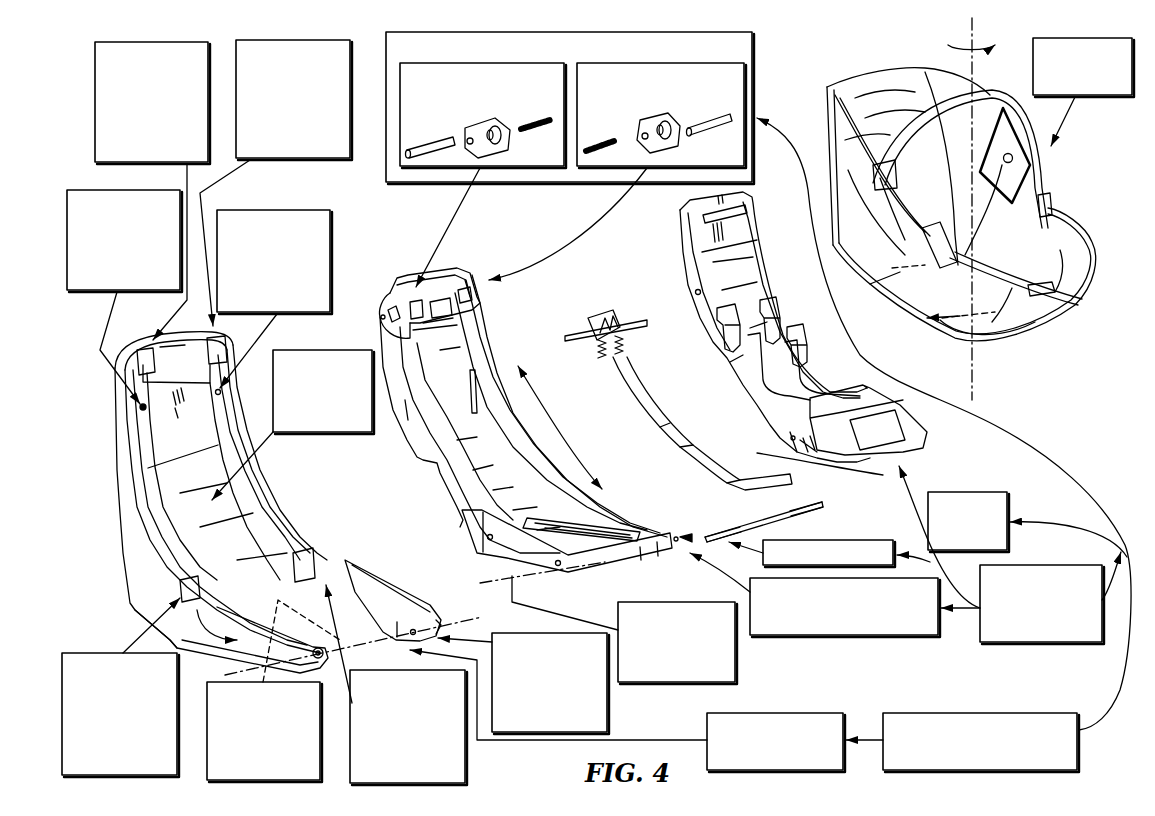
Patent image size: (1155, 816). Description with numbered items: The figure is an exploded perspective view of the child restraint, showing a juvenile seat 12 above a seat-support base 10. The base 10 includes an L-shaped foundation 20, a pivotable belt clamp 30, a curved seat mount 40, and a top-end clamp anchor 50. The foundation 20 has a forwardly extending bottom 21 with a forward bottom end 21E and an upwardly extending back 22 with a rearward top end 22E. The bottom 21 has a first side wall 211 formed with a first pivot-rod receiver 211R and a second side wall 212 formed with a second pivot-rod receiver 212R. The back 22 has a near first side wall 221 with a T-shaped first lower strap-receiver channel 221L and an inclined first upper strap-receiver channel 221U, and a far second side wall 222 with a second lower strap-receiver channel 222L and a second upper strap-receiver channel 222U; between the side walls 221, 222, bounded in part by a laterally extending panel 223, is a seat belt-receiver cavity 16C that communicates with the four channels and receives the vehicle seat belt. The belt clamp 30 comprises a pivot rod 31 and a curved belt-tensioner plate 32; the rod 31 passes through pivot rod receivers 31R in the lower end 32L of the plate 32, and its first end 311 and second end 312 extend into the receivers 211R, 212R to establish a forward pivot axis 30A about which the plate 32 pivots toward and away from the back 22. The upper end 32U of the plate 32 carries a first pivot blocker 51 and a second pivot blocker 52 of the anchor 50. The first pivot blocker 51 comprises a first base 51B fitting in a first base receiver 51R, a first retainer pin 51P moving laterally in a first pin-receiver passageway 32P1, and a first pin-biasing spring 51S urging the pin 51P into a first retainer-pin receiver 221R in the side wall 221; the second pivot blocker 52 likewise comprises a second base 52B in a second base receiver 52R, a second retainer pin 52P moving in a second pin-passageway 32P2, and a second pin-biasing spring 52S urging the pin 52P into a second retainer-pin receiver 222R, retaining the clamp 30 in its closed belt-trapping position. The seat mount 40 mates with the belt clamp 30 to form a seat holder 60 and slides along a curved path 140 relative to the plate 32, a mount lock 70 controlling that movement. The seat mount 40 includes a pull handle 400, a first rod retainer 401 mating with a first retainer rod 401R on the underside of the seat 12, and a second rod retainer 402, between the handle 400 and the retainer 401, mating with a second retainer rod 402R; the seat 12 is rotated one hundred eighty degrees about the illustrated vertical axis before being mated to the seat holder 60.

The seat-support base 10 is at (1079, 740).
The juvenile seat 12 is at (1041, 38).
The seat belt-receiver cavity 16C is at (346, 434).
The L-shaped foundation 20 is at (820, 713).
The bottom 21 is at (209, 502).
The forward bottom end 21E is at (395, 628).
The back 22 is at (400, 582).
The rearward top end 22E is at (114, 436).
The pivotable belt clamp 30 is at (1016, 643).
The forward pivot axis 30A is at (737, 660).
The pivot rod 31 is at (850, 540).
The pivot rod receiver 31R is at (560, 567).
The belt-tensioner plate 32 is at (880, 636).
The lower end of belt-tensioner plate 32L is at (623, 560).
The upper end of belt-tensioner plate 32U is at (480, 284).
The first pin-receiver passageway 32P1 is at (380, 312).
The second pin-passageway 32P2 is at (545, 292).
The seat mount 40 is at (945, 492).
The top-end clamp anchor 50 is at (754, 38).
The first pivot blocker 51 is at (513, 170).
The first base 51B is at (480, 128).
The first retainer pin 51P is at (426, 156).
The first base receiver 51R is at (390, 320).
The first pin-biasing spring 51S is at (548, 134).
The second pivot blocker 52 is at (680, 170).
The second base 52B is at (664, 141).
The second retainer pin 52P is at (733, 115).
The second base receiver 52R is at (481, 304).
The second pin-biasing spring 52S is at (587, 146).
The seat holder 60 is at (511, 347).
The mount lock 70 is at (757, 453).
The curved path 140 is at (550, 432).
The first side wall of bottom 211 is at (300, 640).
The first pivot-rod receiver 211R is at (207, 700).
The second side wall of bottom 212 is at (407, 600).
The second pivot-rod receiver 212R is at (609, 715).
The near first side wall 221 is at (129, 574).
The first lower strap-receiver channel 221L is at (97, 653).
The first retainer-pin receiver 221R is at (132, 190).
The first upper strap-receiver channel 221U is at (142, 42).
The far second side wall 222 is at (323, 532).
The second lower strap-receiver channel 222L is at (467, 760).
The second retainer-pin receiver 222R is at (332, 248).
The second upper strap-receiver channel 222U is at (296, 40).
The laterally extending panel 223 is at (242, 529).
The first end of pivot rod 311 is at (712, 530).
The second end of pivot rod 312 is at (823, 502).
The pull handle 400 is at (738, 198).
The first rod retainer 401 is at (881, 386).
The first retainer rod 401R is at (992, 333).
The second rod retainer 402 is at (798, 312).
The second retainer rod 402R is at (1040, 216).